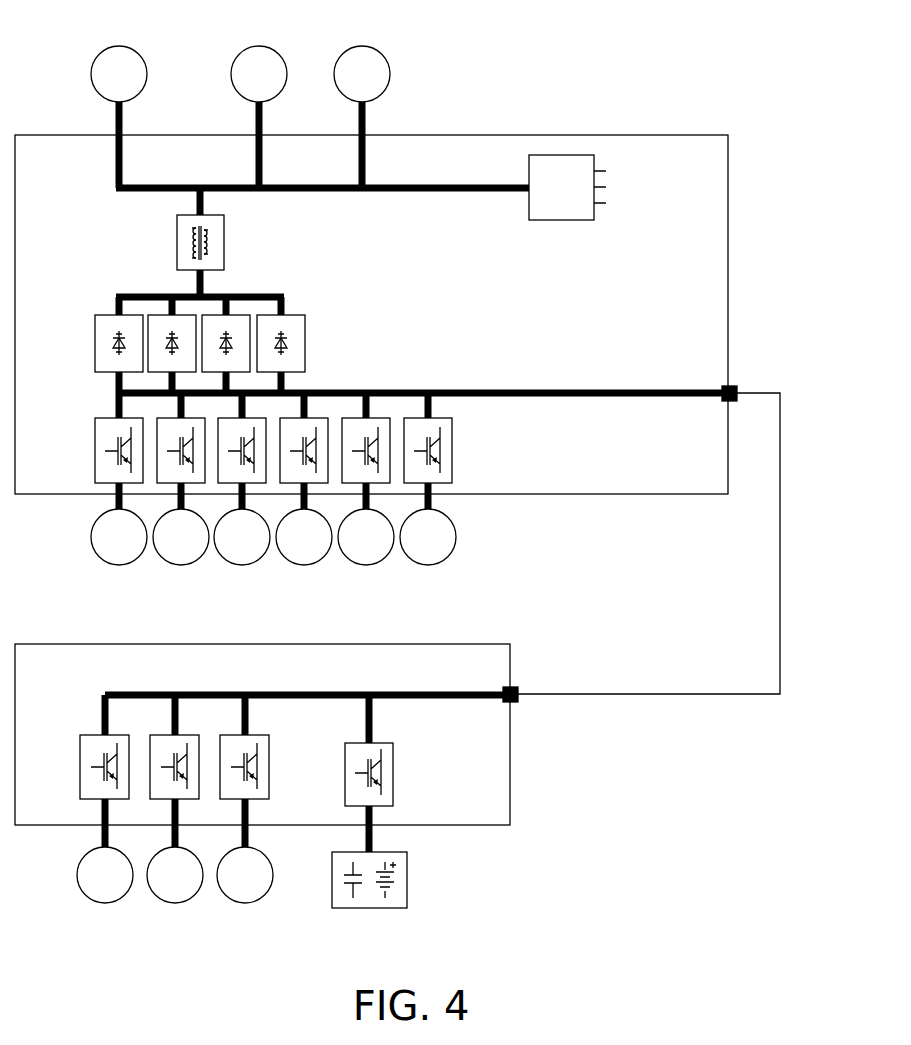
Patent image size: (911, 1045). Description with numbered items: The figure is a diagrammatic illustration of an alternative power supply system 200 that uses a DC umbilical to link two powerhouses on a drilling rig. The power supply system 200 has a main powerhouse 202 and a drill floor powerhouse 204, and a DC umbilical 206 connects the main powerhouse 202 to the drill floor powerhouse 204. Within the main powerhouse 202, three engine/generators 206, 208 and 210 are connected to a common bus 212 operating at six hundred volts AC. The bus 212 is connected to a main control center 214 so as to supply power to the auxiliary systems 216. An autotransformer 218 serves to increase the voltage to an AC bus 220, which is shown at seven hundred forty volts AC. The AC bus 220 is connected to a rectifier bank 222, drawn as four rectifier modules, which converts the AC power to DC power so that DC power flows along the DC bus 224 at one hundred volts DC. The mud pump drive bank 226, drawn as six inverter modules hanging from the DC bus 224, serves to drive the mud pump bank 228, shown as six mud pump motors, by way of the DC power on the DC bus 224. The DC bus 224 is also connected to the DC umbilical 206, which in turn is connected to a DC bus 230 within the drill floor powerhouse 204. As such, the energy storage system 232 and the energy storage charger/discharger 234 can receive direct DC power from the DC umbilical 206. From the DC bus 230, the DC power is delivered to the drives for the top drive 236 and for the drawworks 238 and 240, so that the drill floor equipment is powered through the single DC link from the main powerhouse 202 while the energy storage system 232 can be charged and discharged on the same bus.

The power supply system 200 is at (596, 60).
The main powerhouse 202 is at (668, 135).
The drill floor powerhouse 204 is at (462, 644).
The DC umbilical 206 is at (118, 46).
The engine/generator 208 is at (259, 46).
The engine/generator 210 is at (362, 46).
The bus 212 is at (416, 195).
The main control center 214 is at (558, 222).
The auxiliary systems 216 is at (670, 228).
The autotransformer 218 is at (225, 238).
The AC bus 220 is at (125, 297).
The rectifier bank 222 is at (328, 347).
The DC bus 224 is at (470, 391).
The mud pump drive bank 226 is at (68, 448).
The mud pump bank 228 is at (70, 548).
The DC bus 230 is at (311, 693).
The energy storage system 232 is at (408, 870).
The energy storage charger/discharger 234 is at (394, 769).
The top drive 236 is at (80, 751).
The drawworks 238 is at (191, 736).
The drawworks 240 is at (261, 736).